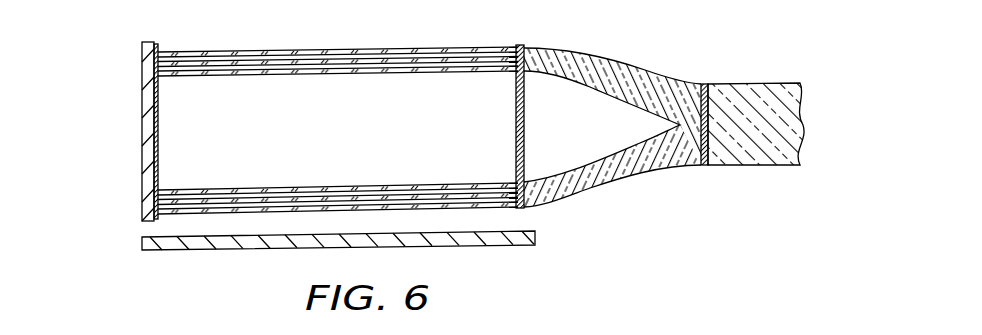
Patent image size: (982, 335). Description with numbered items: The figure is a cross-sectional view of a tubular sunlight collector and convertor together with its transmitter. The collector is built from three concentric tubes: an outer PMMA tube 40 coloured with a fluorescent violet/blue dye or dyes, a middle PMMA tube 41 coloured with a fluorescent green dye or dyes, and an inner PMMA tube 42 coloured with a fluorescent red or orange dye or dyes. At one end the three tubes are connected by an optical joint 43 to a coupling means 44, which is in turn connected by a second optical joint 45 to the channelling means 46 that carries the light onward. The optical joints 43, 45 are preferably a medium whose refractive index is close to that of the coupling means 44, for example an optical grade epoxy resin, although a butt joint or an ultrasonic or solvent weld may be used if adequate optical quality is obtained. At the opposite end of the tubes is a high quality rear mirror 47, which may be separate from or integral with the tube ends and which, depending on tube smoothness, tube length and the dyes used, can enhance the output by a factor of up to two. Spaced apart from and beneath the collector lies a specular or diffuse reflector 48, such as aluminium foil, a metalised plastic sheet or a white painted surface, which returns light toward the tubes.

The outer PMMA tube 40 is at (204, 50).
The middle PMMA tube 41 is at (229, 67).
The inner PMMA tube 42 is at (278, 74).
The optical joint 43 is at (536, 52).
The coupling means 44 is at (638, 72).
The optical joint 45 is at (718, 160).
The channelling means 46 is at (760, 165).
The mirror 47 is at (148, 145).
The reflector 48 is at (497, 246).